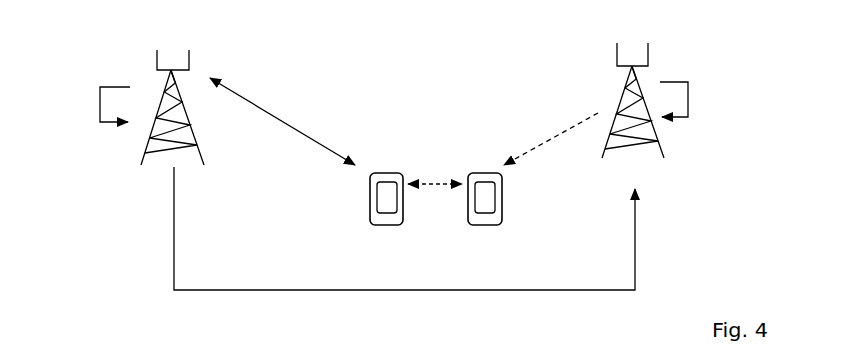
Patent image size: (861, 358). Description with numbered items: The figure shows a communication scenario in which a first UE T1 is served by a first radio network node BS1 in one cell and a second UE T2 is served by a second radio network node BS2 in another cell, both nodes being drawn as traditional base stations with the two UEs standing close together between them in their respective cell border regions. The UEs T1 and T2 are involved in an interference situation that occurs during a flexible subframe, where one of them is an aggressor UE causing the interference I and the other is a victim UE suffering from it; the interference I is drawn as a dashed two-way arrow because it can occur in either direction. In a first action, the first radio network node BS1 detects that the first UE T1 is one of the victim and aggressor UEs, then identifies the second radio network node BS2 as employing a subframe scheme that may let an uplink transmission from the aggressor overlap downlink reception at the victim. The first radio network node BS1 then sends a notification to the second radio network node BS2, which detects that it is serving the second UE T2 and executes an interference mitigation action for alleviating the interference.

The first radio network node BS1 is at (143, 145).
The second radio network node BS2 is at (667, 146).
The first UE T1 is at (370, 207).
The second UE T2 is at (503, 213).
The interference I is at (430, 163).